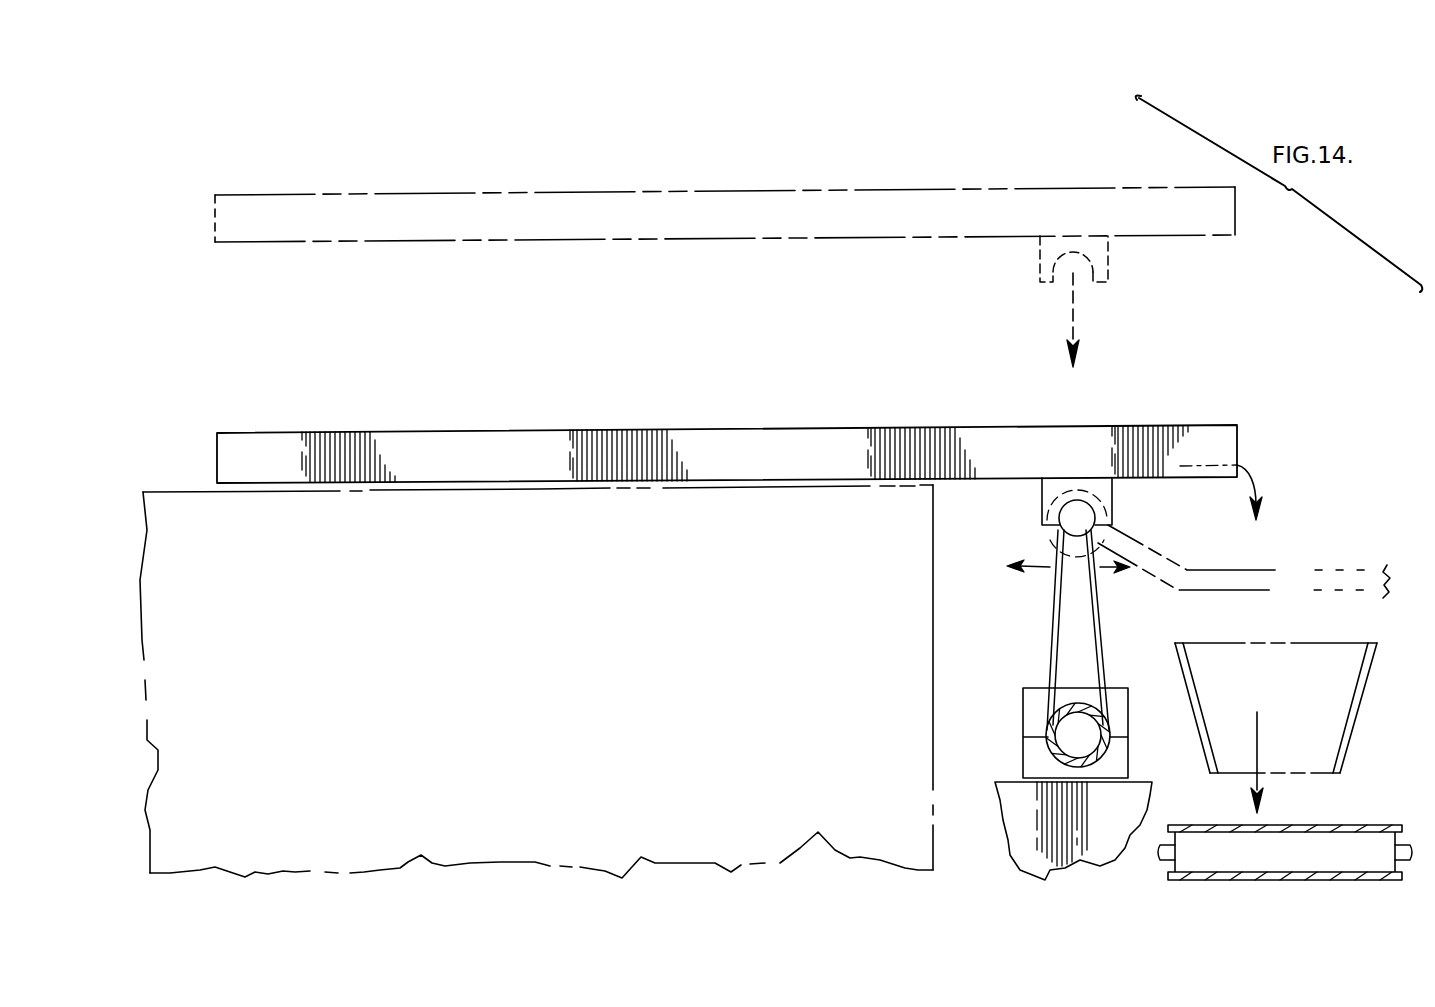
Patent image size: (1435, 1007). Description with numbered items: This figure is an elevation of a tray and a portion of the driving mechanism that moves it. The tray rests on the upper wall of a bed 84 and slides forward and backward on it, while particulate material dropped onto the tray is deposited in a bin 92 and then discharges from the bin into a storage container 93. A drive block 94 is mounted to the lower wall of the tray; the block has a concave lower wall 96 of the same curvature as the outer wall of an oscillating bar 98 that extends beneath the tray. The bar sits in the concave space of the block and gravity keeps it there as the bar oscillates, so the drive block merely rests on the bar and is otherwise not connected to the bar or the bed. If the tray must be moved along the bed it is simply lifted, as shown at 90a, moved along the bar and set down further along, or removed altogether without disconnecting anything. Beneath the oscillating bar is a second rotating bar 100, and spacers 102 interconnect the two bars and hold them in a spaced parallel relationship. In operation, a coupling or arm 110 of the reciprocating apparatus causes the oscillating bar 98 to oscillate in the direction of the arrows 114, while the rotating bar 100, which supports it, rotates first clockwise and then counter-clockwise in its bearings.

The lifted tray position 90a is at (593, 190).
The drive block 94 is at (1037, 273).
The concave lower wall 96 is at (1082, 274).
The bed 84 is at (191, 490).
The oscillating bar 98 is at (1100, 506).
The spacers 102 is at (1062, 617).
The rotating bar 100 is at (1078, 705).
The arrows 114 is at (1048, 563).
The coupling or arm 110 is at (1343, 562).
The bin 92 is at (1353, 738).
The storage container 93 is at (1340, 825).